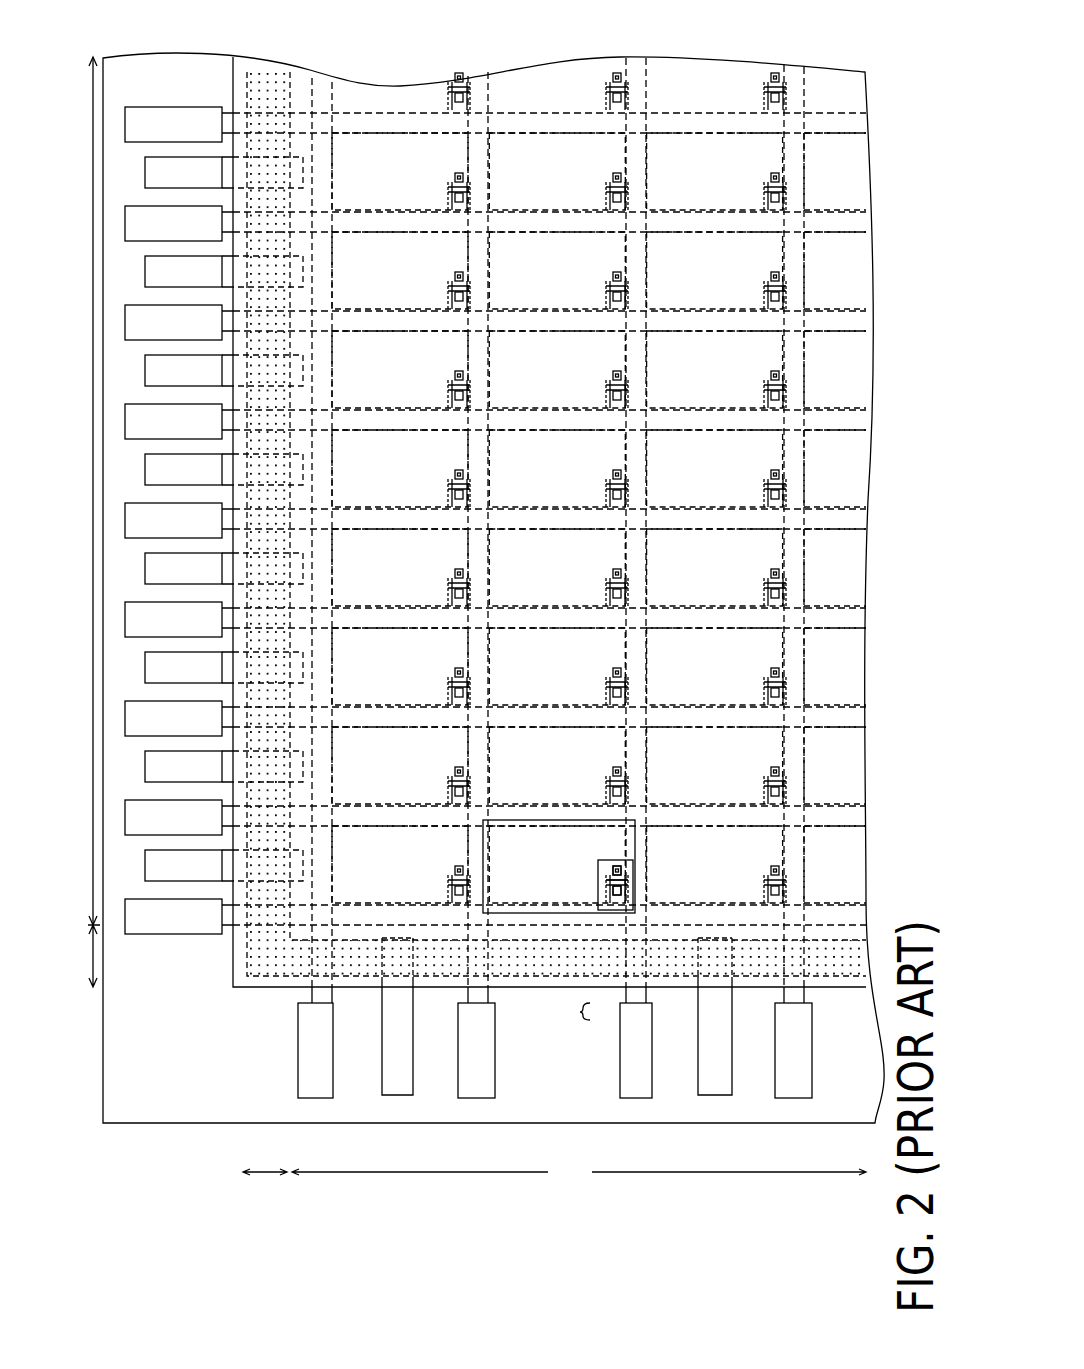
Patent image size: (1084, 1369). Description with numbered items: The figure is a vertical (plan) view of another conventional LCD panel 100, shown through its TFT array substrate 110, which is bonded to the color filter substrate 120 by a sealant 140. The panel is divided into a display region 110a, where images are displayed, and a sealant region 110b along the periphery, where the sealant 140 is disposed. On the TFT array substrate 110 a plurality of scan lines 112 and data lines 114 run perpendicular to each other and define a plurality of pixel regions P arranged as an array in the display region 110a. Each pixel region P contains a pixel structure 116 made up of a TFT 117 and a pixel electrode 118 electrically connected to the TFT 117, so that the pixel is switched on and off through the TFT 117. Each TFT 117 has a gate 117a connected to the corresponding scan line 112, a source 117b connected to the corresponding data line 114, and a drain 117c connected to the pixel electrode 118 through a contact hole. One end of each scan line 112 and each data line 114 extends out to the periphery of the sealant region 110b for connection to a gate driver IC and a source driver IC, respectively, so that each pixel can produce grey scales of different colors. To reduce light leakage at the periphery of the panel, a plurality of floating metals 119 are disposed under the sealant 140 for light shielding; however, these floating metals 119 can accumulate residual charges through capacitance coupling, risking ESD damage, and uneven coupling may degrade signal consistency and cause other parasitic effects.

The LCD panel 100 is at (838, 18).
The TFT array substrate 110 is at (165, 1123).
The display region 110a is at (466, 618).
The sealant region 110b is at (176, 1052).
The scan lines 112 is at (482, 148).
The data lines 114 is at (388, 218).
The pixel structure 116 is at (596, 1029).
The TFT 117 is at (617, 903).
The gate 117a is at (627, 882).
The source 117b is at (627, 897).
The drain 117c is at (608, 870).
The pixel electrode 118 is at (572, 900).
The floating metals 119 is at (145, 866).
The color filter substrate 120 is at (692, 987).
The sealant 140 is at (250, 92).
The pixel regions P is at (535, 913).